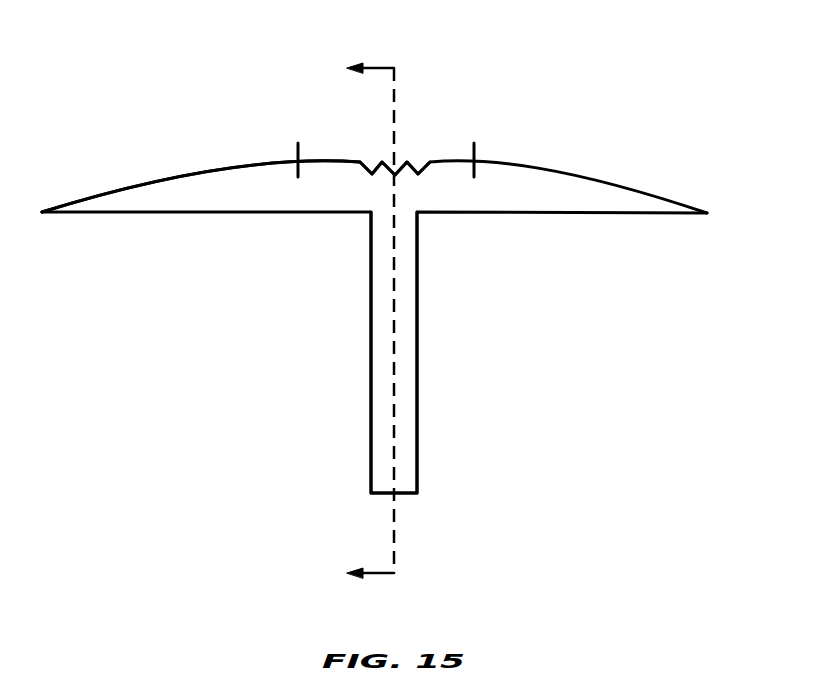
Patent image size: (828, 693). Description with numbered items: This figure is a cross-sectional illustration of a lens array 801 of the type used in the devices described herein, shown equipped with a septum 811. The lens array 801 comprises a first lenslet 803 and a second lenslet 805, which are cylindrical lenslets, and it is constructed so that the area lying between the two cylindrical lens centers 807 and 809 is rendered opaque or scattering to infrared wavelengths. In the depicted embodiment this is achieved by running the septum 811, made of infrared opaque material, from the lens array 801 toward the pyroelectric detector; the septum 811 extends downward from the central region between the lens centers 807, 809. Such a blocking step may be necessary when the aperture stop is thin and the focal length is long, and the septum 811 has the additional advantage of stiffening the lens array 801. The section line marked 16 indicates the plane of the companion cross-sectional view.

The lens array 801 is at (186, 36).
The first lenslet 803 is at (163, 171).
The second lenslet 805 is at (370, 393).
The cylindrical lens center 807 is at (382, 161).
The cylindrical lens center 809 is at (297, 148).
The septum 811 is at (475, 149).
The section line 16- 16 is at (354, 324).